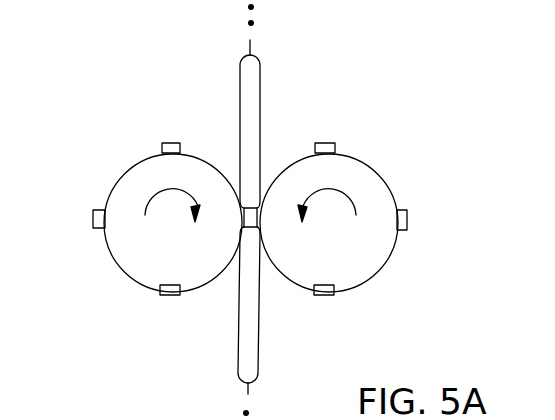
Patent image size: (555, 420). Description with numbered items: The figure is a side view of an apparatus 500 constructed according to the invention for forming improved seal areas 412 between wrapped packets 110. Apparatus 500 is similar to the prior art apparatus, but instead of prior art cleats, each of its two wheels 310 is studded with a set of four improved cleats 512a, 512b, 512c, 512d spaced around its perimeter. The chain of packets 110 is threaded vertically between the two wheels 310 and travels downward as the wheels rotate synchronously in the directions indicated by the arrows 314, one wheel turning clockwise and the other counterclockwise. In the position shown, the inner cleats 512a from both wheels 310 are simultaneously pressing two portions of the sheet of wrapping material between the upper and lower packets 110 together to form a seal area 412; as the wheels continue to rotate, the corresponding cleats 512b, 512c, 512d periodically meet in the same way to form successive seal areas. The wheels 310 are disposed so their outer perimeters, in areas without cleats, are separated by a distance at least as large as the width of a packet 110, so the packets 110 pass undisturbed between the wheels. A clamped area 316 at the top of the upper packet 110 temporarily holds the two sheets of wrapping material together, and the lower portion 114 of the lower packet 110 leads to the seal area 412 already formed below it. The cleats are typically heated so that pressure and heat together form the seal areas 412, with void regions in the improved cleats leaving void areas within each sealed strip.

The apparatus 500 is at (105, 293).
The packet 110 is at (261, 86).
The distal portion of rod 114 is at (239, 352).
The clamped area 316 is at (254, 41).
The improved seal area 412 is at (254, 391).
The wheel 310 is at (122, 177).
The arrow 314 is at (176, 191).
The improved cleat 512a is at (243, 216).
The improved cleat 512b is at (170, 143).
The improved cleat 512c is at (93, 218).
The improved cleat 512d is at (168, 296).